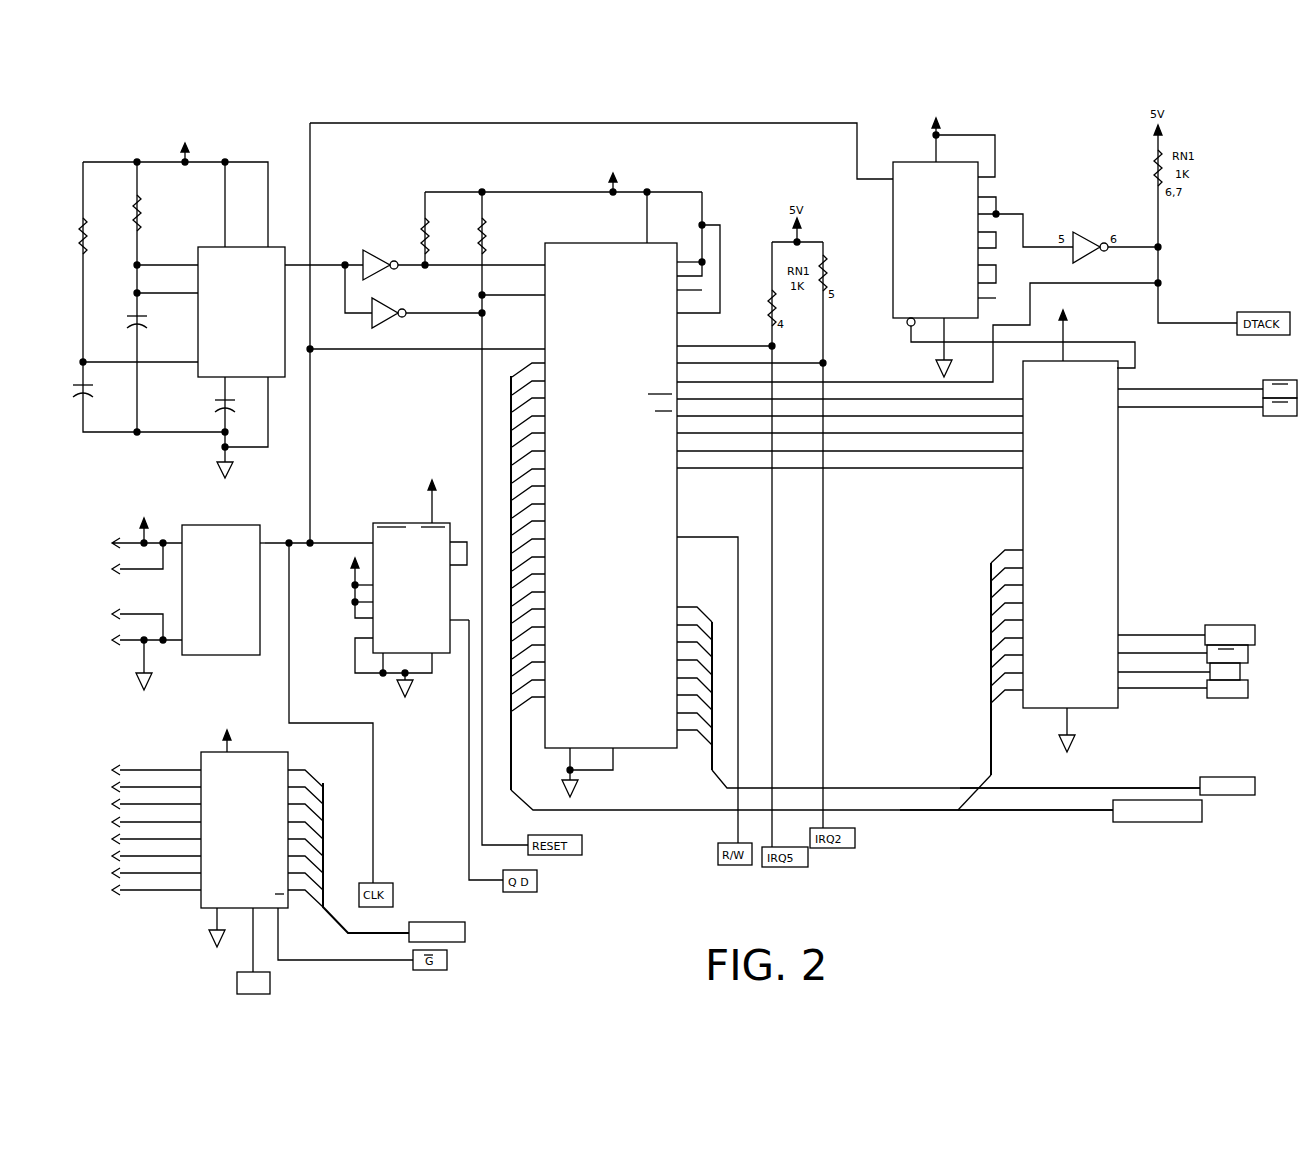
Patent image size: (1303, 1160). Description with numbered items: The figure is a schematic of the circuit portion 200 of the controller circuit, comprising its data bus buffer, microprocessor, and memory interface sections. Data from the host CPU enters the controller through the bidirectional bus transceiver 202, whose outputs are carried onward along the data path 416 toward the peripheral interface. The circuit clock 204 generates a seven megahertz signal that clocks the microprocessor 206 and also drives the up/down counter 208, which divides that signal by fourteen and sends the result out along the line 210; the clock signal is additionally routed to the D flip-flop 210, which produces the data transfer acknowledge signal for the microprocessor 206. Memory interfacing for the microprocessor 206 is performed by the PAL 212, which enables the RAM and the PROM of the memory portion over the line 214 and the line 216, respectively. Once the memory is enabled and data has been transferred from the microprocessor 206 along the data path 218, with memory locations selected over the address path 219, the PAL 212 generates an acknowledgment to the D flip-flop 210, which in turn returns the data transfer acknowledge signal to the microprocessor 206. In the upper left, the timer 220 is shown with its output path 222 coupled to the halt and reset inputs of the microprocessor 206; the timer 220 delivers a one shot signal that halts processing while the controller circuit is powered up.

The circuit portion 200 is at (72, 160).
The bidirectional bus transceiver 202 is at (260, 752).
The circuit clock 204 is at (228, 525).
The microprocessor 206 is at (597, 243).
The up/down counter 208 is at (403, 523).
The D flip-flop 210 is at (905, 162).
The PAL 212 is at (1118, 497).
The line 214 is at (1188, 389).
The line 216 is at (1192, 407).
The data path 218 is at (1140, 787).
The address path 219 is at (1043, 810).
The timer 220 is at (276, 246).
The output path 222 is at (328, 262).
The data path 416 is at (398, 933).